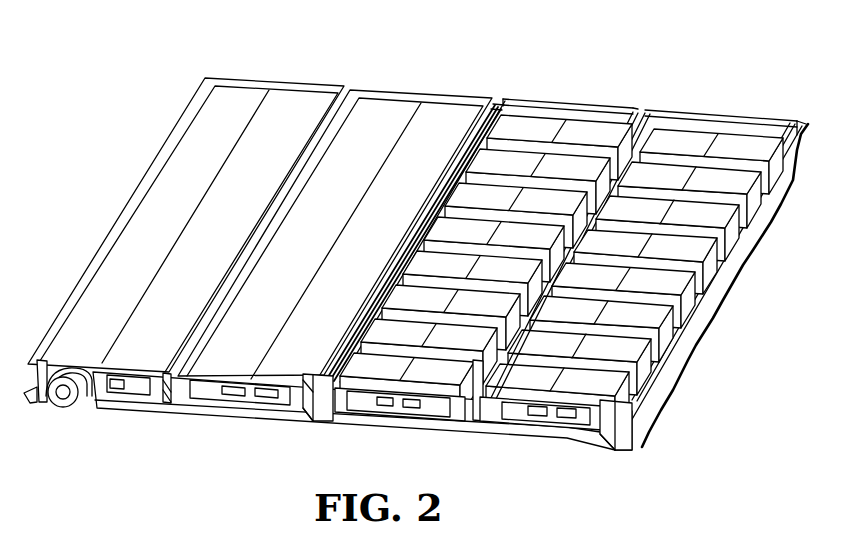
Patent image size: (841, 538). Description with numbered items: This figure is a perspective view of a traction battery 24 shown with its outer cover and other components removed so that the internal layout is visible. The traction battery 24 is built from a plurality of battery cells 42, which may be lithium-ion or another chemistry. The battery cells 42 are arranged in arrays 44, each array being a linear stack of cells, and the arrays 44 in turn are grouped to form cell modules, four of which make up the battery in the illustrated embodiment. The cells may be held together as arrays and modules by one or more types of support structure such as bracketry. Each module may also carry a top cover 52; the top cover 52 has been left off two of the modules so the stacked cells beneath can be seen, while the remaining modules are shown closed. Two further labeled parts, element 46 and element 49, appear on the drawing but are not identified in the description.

The traction battery 24 is at (226, 41).
The battery cells 42 is at (753, 118).
The arrays 44 is at (563, 108).
The hinge / connector 46 is at (491, 88).
The control module 49 is at (455, 408).
The top cover 52 is at (198, 147).